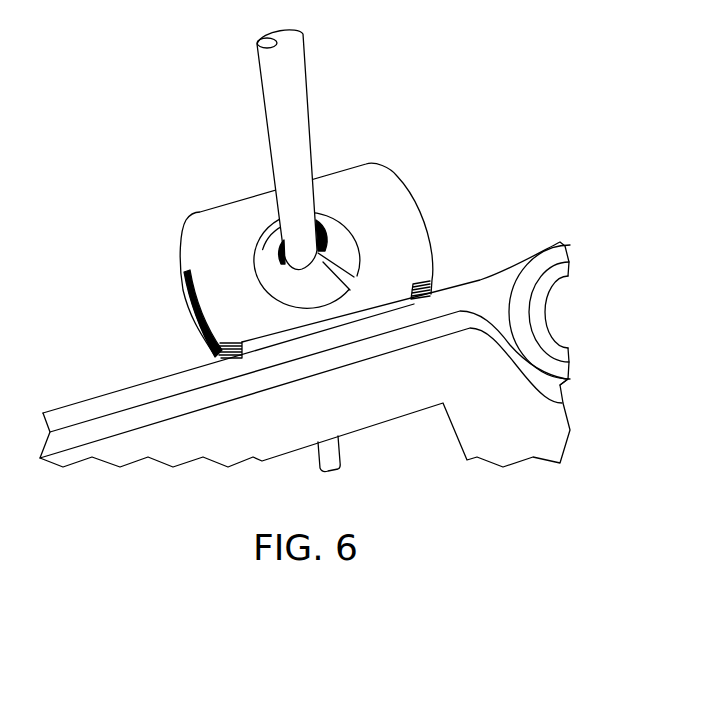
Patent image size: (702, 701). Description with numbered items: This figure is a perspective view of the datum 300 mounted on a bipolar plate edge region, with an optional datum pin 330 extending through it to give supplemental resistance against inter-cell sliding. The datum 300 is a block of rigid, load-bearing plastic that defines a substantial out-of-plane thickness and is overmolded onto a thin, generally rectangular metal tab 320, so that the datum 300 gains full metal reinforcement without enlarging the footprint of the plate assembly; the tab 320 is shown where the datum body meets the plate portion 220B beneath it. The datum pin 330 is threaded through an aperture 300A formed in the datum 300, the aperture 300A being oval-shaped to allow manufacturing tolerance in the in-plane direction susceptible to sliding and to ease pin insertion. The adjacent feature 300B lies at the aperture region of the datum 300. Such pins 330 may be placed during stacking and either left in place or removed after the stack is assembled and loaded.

The plate / rail 220B is at (100, 403).
The datum 300 is at (390, 184).
The aperture 300A is at (258, 256).
The second jaw portion of clamp 300B is at (270, 229).
The metal tab 320 is at (408, 295).
The datum pin 330 is at (300, 90).